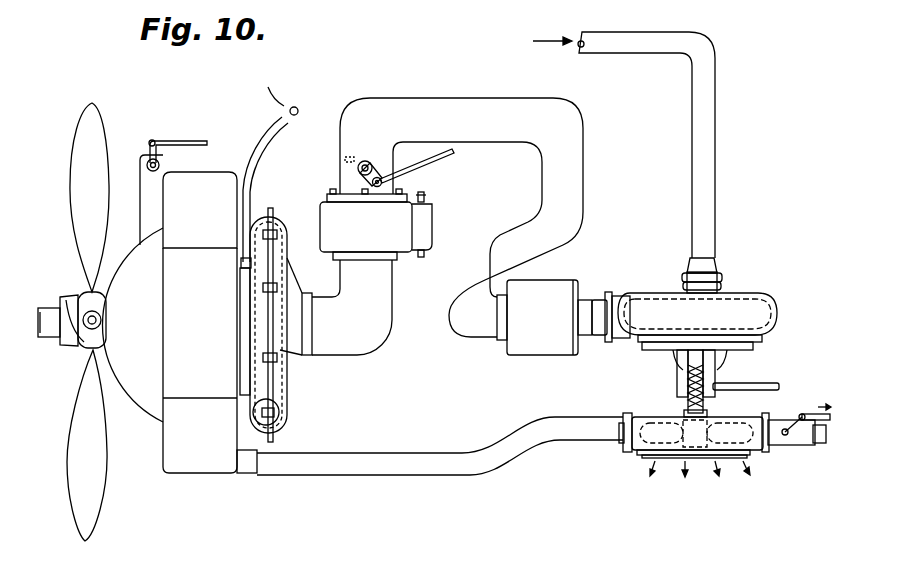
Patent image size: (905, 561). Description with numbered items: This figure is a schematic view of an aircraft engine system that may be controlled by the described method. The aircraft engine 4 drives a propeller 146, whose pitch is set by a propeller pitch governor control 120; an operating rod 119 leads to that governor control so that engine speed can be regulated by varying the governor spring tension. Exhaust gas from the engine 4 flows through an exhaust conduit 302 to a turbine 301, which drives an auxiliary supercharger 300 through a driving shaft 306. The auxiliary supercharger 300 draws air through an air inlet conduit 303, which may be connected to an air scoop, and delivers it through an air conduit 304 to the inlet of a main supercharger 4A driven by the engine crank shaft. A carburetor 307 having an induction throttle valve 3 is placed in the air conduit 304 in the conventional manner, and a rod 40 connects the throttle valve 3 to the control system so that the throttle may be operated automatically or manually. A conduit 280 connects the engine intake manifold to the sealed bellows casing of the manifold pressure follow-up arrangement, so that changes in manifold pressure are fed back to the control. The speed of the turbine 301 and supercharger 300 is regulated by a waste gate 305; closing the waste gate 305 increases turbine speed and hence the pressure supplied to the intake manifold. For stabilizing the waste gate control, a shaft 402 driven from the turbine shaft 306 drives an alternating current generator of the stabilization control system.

The propeller 146 is at (76, 132).
The rod 119 is at (182, 139).
The conduit 280 is at (267, 136).
The propeller pitch governor control 120 is at (155, 188).
The aircraft engine 4 is at (218, 241).
The main supercharger 4A is at (281, 352).
The induction throttle valve 3 is at (377, 165).
The rod 40 is at (435, 160).
The carburetor 307 is at (372, 272).
The air conduit 304 is at (460, 108).
The air inlet conduit 303 is at (710, 139).
The auxiliary supercharger 300 is at (762, 353).
The shaft 402 is at (763, 385).
The driving shaft 306 is at (701, 403).
The turbine 301 is at (653, 414).
The waste gate 305 is at (786, 436).
The exhaust conduit 302 is at (470, 468).